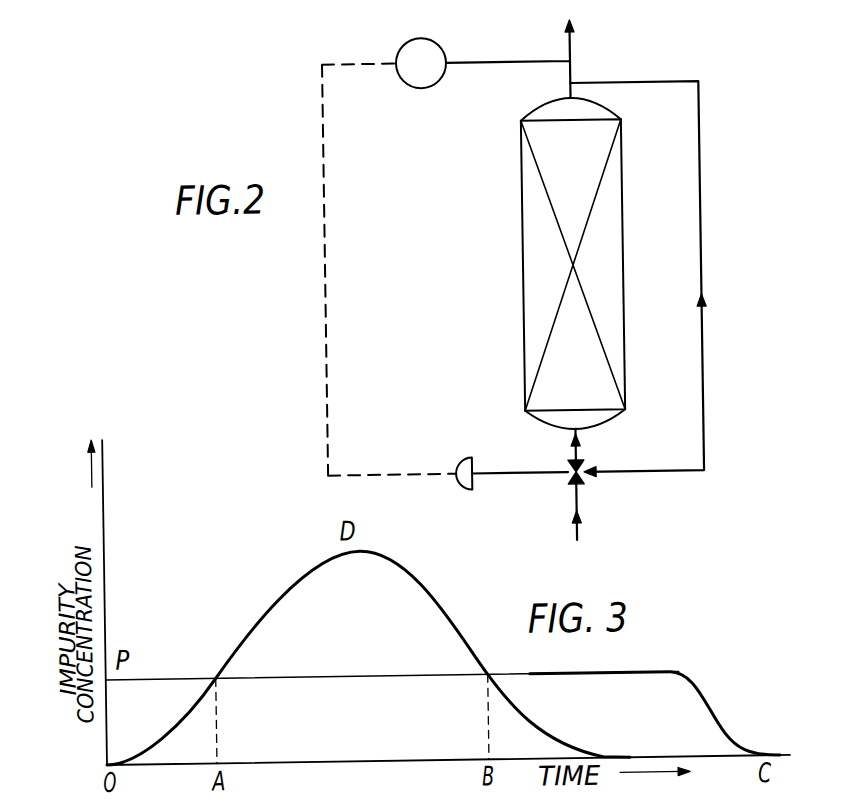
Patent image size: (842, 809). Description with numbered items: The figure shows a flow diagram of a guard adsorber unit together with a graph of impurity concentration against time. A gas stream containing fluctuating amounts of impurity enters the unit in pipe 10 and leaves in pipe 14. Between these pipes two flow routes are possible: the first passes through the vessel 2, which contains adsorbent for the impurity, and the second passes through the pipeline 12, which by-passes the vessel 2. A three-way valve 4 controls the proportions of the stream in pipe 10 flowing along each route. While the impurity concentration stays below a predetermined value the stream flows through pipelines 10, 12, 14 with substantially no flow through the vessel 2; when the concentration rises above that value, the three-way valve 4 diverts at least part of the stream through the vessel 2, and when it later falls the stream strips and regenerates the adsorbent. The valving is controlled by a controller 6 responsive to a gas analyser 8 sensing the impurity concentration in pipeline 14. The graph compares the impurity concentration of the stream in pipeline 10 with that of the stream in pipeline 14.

In FIG. 2, the guard adsorber vessel 2 is at (520, 233).
In FIG. 2, the three-way valve 4 is at (580, 469).
In FIG. 2, the controller 6 is at (456, 464).
In FIG. 2, the gas analyser 8 is at (438, 79).
In FIG. 2, the inlet pipe 10 is at (572, 500).
In FIG. 3, the inlet pipe 10 is at (333, 551).
In FIG. 2, the by-pass pipeline 12 is at (700, 255).
In FIG. 2, the outlet pipe 14 is at (571, 47).
In FIG. 3, the outlet pipe 14 is at (531, 678).